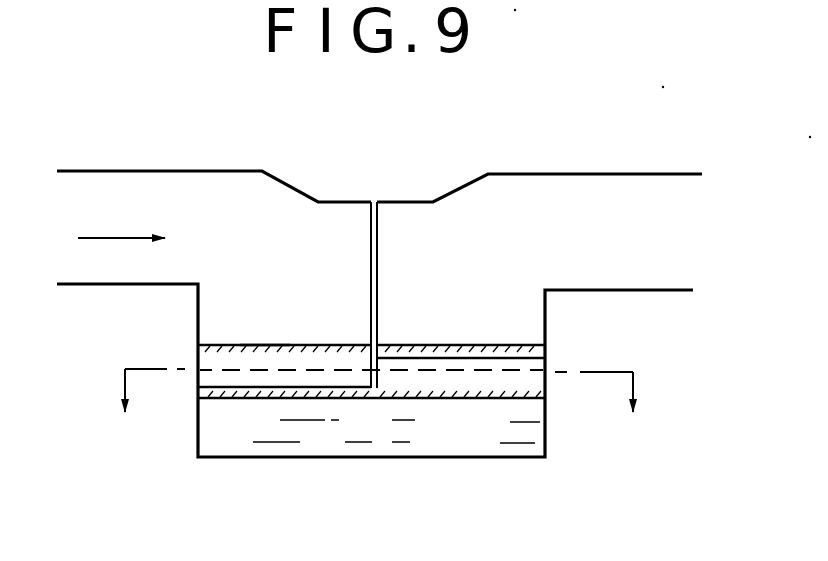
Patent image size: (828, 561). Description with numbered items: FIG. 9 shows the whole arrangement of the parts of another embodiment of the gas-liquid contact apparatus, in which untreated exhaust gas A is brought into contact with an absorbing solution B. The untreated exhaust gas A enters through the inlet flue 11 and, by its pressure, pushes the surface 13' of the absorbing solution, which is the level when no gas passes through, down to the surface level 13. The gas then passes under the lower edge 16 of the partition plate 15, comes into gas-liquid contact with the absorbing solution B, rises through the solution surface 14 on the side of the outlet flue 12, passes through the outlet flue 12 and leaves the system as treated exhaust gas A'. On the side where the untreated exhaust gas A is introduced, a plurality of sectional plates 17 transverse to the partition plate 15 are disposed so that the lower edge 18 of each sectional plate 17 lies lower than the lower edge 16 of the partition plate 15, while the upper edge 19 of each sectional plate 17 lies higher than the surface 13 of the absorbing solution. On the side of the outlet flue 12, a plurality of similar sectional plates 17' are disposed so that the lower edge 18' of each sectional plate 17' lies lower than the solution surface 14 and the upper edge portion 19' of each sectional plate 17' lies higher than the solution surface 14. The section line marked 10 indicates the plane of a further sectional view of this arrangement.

The section line for FIG. 10 is at (383, 414).
The inlet flue 11 is at (118, 188).
The outlet flue 12 is at (550, 190).
The surface level of the absorbing solution 13 is at (284, 339).
The surface of the absorbing solution 13' is at (413, 330).
The solution surface 14 is at (400, 356).
The partition plate 15 is at (379, 243).
The lower edge of the partition plate 16 is at (371, 399).
The sectional plates 17 is at (265, 306).
The sectional plates 17' is at (457, 325).
The lower edge of each sectional plate 18 is at (296, 423).
The lower edge of each sectional plate 18' is at (466, 428).
The upper edge of each sectional plate 19 is at (284, 305).
The upper edge portion of each sectional plate 19' is at (461, 305).
The untreated exhaust gas A is at (118, 213).
The treated exhaust gas A' is at (677, 236).
The absorbing solution B is at (520, 432).